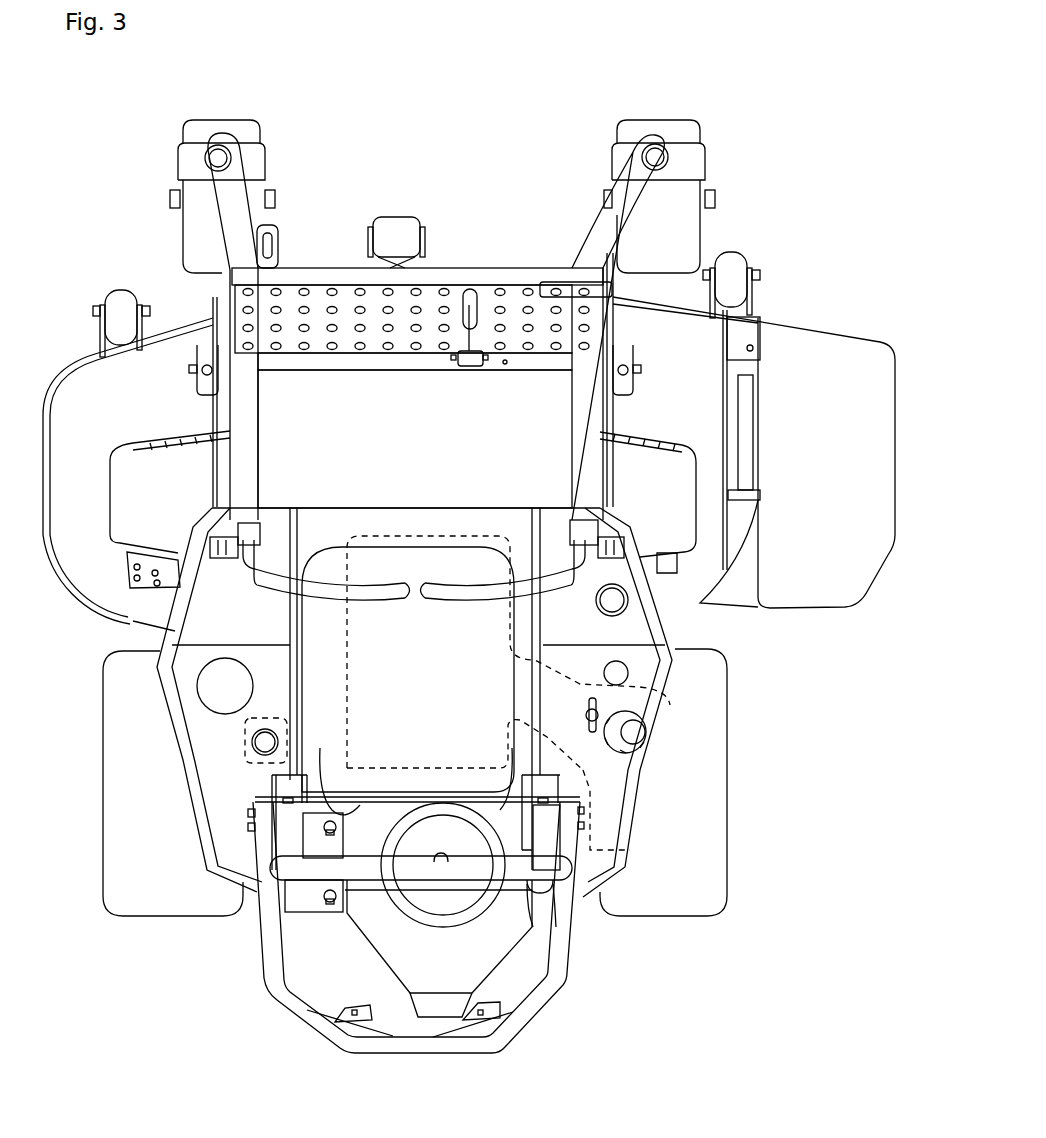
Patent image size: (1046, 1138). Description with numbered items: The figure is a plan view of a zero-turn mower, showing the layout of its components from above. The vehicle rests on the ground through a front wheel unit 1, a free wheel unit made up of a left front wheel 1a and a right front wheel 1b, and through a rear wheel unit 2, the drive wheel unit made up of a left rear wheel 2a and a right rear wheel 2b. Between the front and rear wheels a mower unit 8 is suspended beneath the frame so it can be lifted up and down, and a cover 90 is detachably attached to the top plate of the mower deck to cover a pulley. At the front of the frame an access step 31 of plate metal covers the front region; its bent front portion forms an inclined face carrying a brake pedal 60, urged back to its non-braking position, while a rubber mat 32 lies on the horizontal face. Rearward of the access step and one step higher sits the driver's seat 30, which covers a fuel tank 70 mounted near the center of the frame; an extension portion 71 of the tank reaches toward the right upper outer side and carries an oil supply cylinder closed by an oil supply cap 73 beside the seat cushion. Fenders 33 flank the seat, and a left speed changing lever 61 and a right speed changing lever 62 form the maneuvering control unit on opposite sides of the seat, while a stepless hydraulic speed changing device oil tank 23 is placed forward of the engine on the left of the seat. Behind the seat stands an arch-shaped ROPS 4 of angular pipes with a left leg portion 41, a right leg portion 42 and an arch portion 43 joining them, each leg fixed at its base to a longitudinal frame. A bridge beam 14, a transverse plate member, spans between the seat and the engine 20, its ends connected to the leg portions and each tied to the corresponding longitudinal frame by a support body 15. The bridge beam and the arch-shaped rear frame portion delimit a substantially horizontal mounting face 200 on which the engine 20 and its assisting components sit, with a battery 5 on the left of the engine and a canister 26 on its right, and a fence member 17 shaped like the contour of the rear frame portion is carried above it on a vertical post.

The front wheel unit 1 is at (439, 196).
The left front wheel 1a is at (193, 240).
The right front wheel 1b is at (688, 230).
The rear wheel unit 2 is at (415, 824).
The left rear wheel 2a is at (160, 913).
The right rear wheel 2b is at (678, 913).
The ROPS 4 is at (449, 887).
The battery 5 is at (300, 900).
The mower unit 8 is at (67, 362).
The bridge beam 14 is at (383, 810).
The support body 15 is at (302, 792).
The fence member 17 is at (283, 1010).
The engine 20 is at (427, 1018).
The stepless hydraulic speed changing device oil tank 23 is at (252, 742).
The canister 26 is at (534, 888).
The driver's seat 30 is at (385, 550).
The access step 31 is at (322, 292).
The rubber mat 32 is at (273, 410).
The fenders 33 is at (212, 770).
The left leg portion 41 is at (283, 847).
The right leg portion 42 is at (549, 845).
The arch portion 43 is at (365, 882).
The brake pedal 60 is at (466, 368).
The left speed changing lever 61 is at (380, 592).
The right speed changing lever 62 is at (462, 592).
The fuel tank 70 is at (468, 540).
The extension portion 71 is at (640, 803).
The oil supply cap 73 is at (640, 735).
The cover 90 is at (113, 488).
The mounting face 200 is at (520, 985).